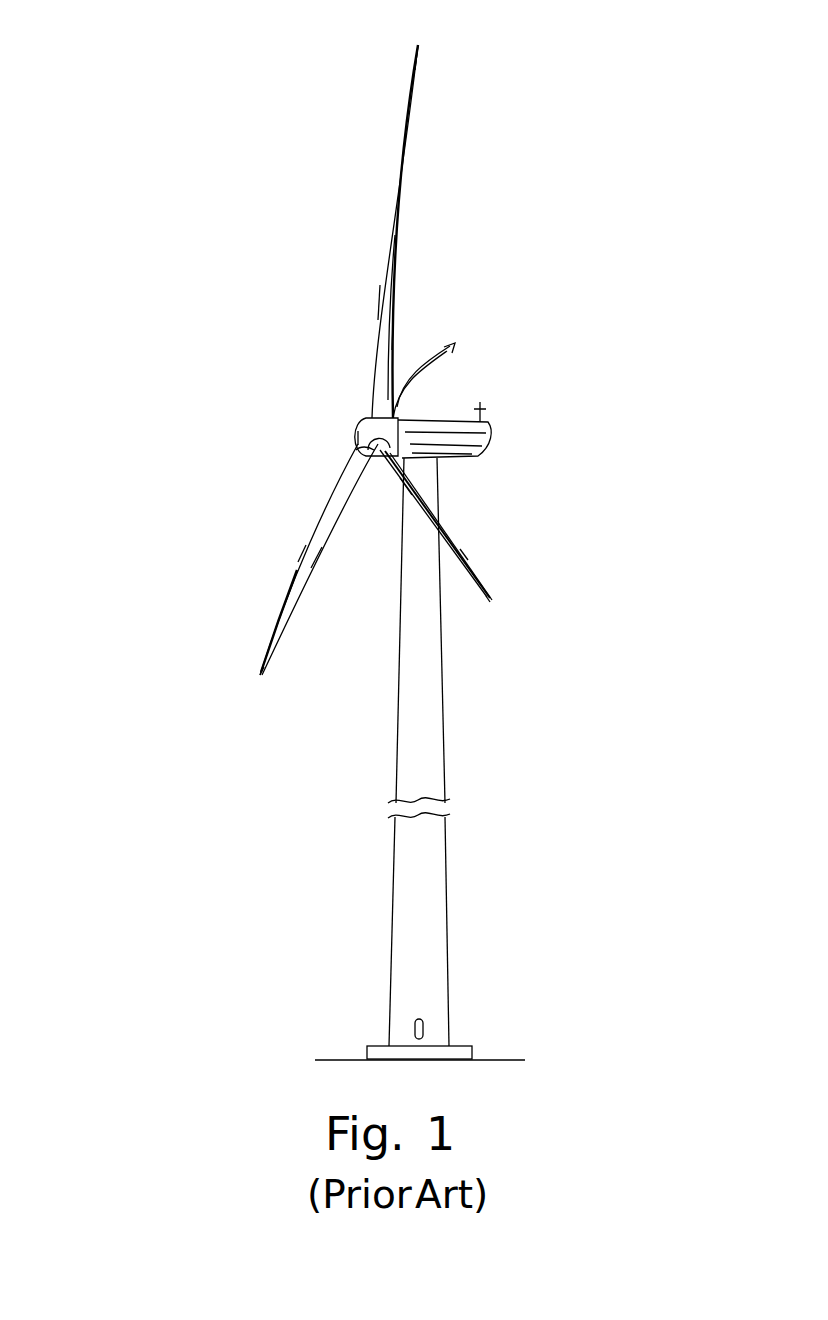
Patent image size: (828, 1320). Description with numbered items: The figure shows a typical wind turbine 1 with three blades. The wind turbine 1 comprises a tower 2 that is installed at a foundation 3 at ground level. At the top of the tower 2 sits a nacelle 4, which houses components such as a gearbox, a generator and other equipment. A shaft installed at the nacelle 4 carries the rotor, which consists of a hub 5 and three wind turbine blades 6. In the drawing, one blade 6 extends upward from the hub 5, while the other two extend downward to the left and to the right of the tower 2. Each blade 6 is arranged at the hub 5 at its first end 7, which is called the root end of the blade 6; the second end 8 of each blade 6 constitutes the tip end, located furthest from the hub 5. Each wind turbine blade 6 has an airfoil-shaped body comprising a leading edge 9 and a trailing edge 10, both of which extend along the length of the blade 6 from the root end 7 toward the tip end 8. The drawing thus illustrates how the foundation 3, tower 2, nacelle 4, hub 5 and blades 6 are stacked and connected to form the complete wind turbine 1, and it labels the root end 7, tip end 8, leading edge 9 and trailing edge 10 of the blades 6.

The wind turbine 1 is at (185, 393).
The tower 2 is at (432, 765).
The foundation 3 is at (458, 1046).
The nacelle 4 is at (494, 440).
The hub 5 is at (356, 430).
The wind turbine blade 6 is at (392, 270).
The first end 7 is at (274, 470).
The second end 8 is at (419, 46).
The leading edge 9 is at (379, 285).
The trailing edge 10 is at (396, 322).